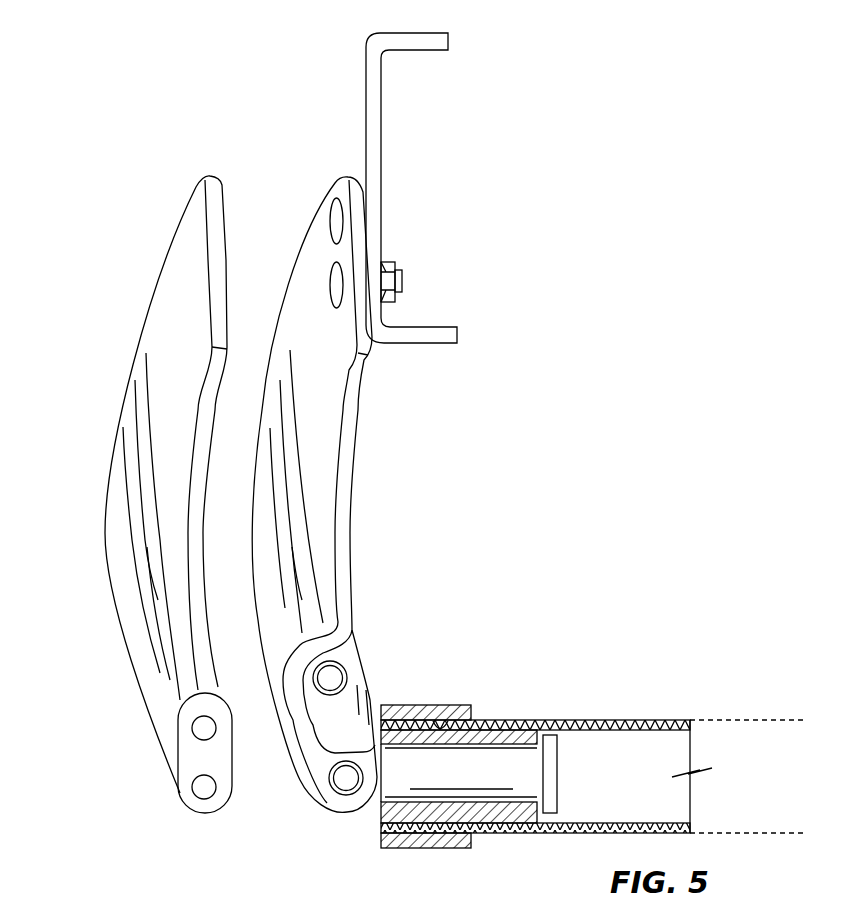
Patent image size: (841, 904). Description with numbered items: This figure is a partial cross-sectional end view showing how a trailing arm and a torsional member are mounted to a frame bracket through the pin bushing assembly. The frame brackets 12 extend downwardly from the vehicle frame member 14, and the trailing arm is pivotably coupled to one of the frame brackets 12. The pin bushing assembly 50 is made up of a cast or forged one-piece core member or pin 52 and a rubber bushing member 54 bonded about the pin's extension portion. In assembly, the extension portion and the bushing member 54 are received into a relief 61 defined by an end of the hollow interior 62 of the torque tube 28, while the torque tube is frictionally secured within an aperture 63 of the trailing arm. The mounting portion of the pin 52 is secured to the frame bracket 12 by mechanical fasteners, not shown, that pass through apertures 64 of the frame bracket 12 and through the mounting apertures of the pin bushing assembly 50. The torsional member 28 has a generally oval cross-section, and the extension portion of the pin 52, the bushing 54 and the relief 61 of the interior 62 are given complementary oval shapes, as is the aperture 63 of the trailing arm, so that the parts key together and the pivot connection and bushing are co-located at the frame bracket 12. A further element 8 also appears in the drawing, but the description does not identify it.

The end cap 8 is at (408, 700).
The frame bracket 12 is at (105, 543).
The vehicle frame member 14 is at (381, 113).
The torsional member 28 is at (768, 716).
The pin bushing assembly 50 is at (477, 712).
The core member 52 is at (410, 896).
The rubber bushing member 54 is at (514, 730).
The relief 61 is at (498, 808).
The hollow interior 62 is at (528, 773).
The aperture 63 is at (452, 720).
The frame bracket aperture 64 is at (193, 797).